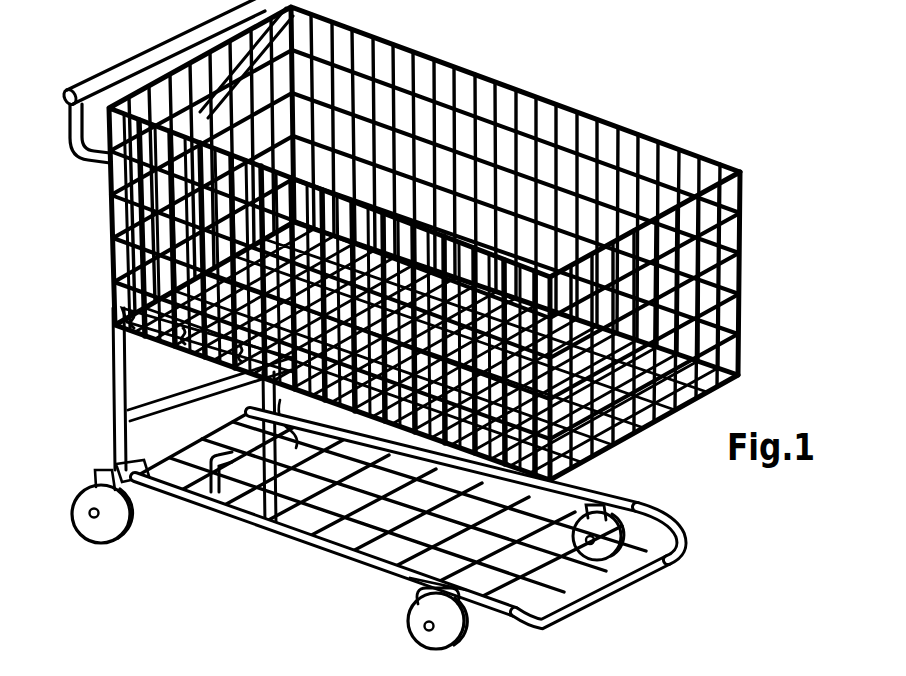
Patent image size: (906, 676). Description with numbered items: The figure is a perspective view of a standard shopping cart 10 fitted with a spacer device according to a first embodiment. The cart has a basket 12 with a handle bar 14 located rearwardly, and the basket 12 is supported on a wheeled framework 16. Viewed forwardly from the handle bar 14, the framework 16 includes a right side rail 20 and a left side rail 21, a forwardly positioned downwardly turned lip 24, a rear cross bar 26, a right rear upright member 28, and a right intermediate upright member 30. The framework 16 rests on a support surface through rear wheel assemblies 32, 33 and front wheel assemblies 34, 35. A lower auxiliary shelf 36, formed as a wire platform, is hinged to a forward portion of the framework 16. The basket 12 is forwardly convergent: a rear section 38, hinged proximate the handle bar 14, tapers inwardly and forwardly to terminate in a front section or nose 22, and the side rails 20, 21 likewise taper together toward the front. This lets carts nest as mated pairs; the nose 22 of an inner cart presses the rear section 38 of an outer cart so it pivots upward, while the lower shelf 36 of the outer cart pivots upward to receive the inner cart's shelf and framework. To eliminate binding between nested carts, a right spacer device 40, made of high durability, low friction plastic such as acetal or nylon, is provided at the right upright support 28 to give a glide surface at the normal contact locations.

The shopping cart 10 is at (604, 79).
The basket 12 is at (474, 70).
The handle bar 14 is at (150, 44).
The wheeled framework 16 is at (163, 431).
The right side rail 20 is at (347, 553).
The left side rail 21 is at (633, 505).
The front section or nose 22 is at (745, 312).
The downwardly turned lip 24 is at (600, 605).
The rear cross bar 26 is at (167, 388).
The right rear upright member 28 is at (120, 398).
The right intermediate upright member 30 is at (230, 508).
The rear wheel assembly 32 is at (100, 537).
The rear wheel assembly 33 is at (290, 532).
The front wheel assembly 34 is at (463, 645).
The front wheel assembly 35 is at (667, 560).
The lower auxiliary shelf 36 is at (410, 562).
The rear section 38 is at (110, 199).
The right spacer device 40 is at (146, 468).